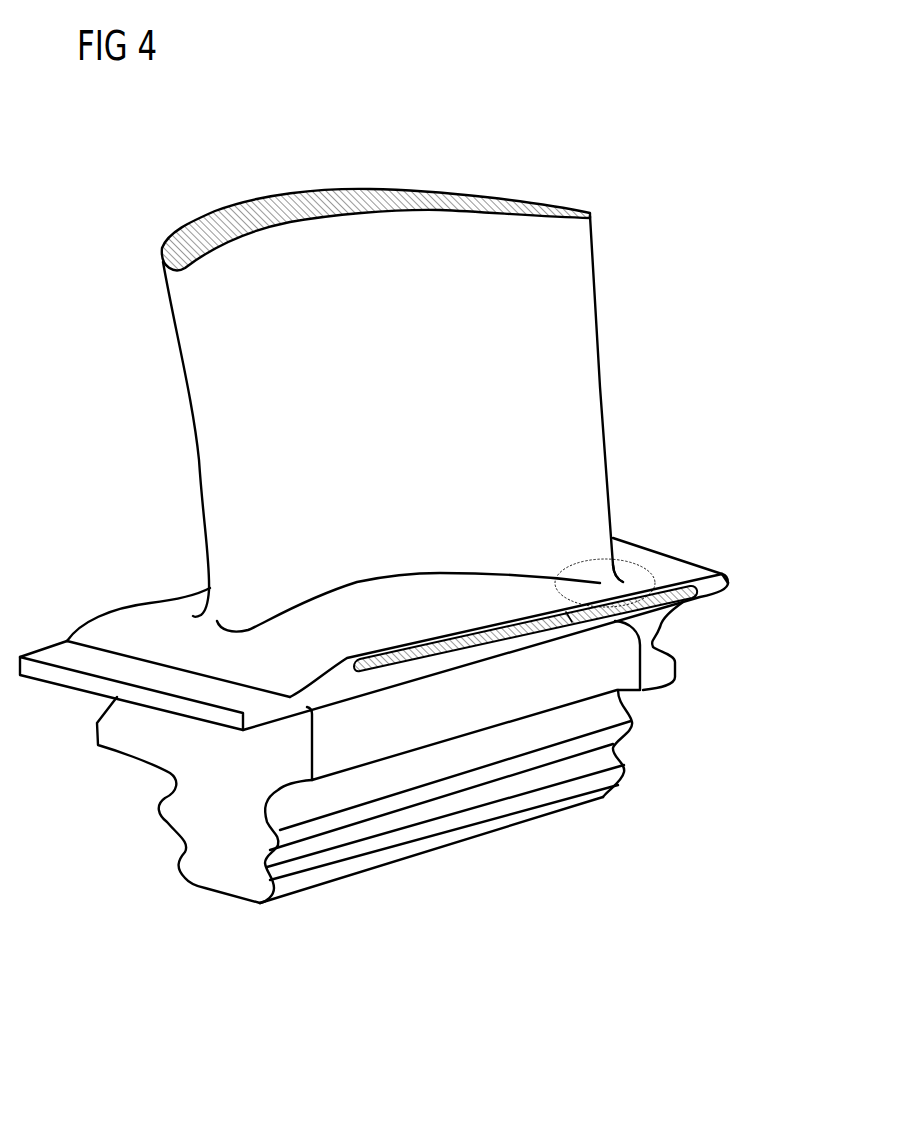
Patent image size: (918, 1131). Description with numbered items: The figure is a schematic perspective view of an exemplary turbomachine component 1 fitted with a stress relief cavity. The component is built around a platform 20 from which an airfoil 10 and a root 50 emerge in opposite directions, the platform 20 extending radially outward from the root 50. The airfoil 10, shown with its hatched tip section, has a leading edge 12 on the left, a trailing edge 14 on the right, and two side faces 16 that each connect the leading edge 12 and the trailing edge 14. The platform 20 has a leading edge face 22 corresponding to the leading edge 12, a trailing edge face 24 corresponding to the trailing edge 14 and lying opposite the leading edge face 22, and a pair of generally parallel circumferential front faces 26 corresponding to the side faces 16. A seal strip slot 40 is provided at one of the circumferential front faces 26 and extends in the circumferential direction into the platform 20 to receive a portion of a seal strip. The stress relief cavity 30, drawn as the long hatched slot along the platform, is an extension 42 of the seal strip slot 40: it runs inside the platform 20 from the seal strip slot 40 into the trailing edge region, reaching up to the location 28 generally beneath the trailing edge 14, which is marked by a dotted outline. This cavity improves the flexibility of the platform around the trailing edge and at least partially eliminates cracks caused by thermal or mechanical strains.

The turbomachine component 1 is at (511, 160).
The airfoil 10 is at (410, 196).
The leading edge 12 is at (199, 456).
The trailing edge 14 is at (597, 288).
The side faces 16 is at (244, 196).
The platform 20 is at (166, 630).
The leading edge face 22 is at (45, 668).
The trailing edge face 24 is at (736, 580).
The circumferential front faces 26 is at (46, 641).
The location beneath the trailing edge 28 is at (621, 565).
The stress relief cavity 30 is at (634, 606).
The seal strip slot 40 is at (690, 603).
The extension 42 is at (657, 578).
The root 50 is at (217, 853).